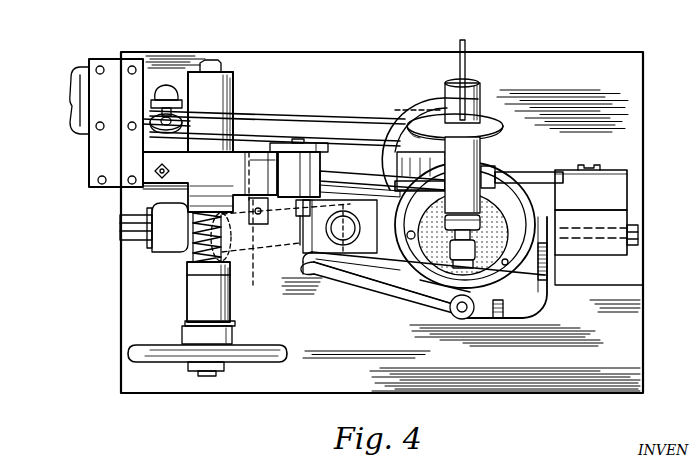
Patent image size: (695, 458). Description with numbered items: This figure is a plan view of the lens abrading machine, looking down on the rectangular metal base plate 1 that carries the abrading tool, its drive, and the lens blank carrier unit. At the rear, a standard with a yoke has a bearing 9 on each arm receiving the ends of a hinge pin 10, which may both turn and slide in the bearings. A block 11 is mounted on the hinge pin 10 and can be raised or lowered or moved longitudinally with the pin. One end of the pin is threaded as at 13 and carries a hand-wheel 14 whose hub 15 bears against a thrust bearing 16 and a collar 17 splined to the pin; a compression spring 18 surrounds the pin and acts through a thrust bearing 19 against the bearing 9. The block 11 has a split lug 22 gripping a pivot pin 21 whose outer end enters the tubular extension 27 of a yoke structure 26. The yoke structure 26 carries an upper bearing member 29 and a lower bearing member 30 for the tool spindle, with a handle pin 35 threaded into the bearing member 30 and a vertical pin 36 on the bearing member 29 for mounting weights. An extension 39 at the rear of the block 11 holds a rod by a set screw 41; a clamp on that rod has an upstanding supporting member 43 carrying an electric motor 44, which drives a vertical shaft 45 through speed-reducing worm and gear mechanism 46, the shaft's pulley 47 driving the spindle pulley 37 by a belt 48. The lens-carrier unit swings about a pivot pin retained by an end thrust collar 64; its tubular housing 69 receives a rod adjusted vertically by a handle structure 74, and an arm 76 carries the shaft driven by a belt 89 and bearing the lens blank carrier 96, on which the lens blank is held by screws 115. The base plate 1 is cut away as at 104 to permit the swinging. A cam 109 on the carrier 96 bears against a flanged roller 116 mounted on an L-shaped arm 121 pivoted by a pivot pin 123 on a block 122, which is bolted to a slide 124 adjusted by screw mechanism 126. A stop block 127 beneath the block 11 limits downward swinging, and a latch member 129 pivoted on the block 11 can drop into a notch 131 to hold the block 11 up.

The base plate 1 is at (307, 73).
The bearing 9 is at (208, 92).
The hinge pin 10 is at (216, 64).
The block 11 is at (240, 165).
The threaded portion 13 is at (218, 369).
The hand-wheel 14 is at (147, 352).
The hub 15 is at (200, 350).
The thrust bearing 16 is at (190, 334).
The collar 17 is at (190, 323).
The compression spring 18 is at (197, 244).
The thrust bearing 19 is at (200, 268).
The pivot pin 21 is at (350, 172).
The lug 22 is at (313, 152).
The yoke structure 26 is at (407, 117).
The tubular extension 27 is at (410, 178).
The bearing member 29 is at (473, 95).
The bearing member 30 is at (463, 170).
The pin 35 is at (533, 175).
The second pin 36 is at (460, 64).
The pulley 37 is at (483, 129).
The extension 39 is at (178, 172).
The set screw 41 is at (159, 180).
The supporting member 43 is at (110, 68).
The electric motor 44 is at (73, 93).
The vertical shaft 45 is at (161, 112).
The speed-reducing worm and gear mechanism 46 is at (167, 86).
The pulley 47 is at (158, 130).
The belt 48 is at (290, 114).
The end thrust collar 64 is at (162, 229).
The tubular housing 69 is at (375, 254).
The handle structure 74 is at (357, 214).
The arm 76 is at (358, 266).
The belt 89 is at (255, 251).
The lens blank carrier 96 is at (500, 268).
The cut-away 104 is at (384, 286).
The cam 109 is at (437, 288).
The screws 115 is at (408, 237).
The flanged roller 116 is at (461, 319).
The L-shaped arm 121 is at (537, 298).
The block 122 is at (613, 220).
The pivot pin 123 is at (640, 235).
The slide 124 is at (613, 195).
The screw mechanism 126 is at (595, 166).
The block 127 is at (256, 200).
The latch member 129 is at (303, 212).
The notch 131 is at (305, 268).